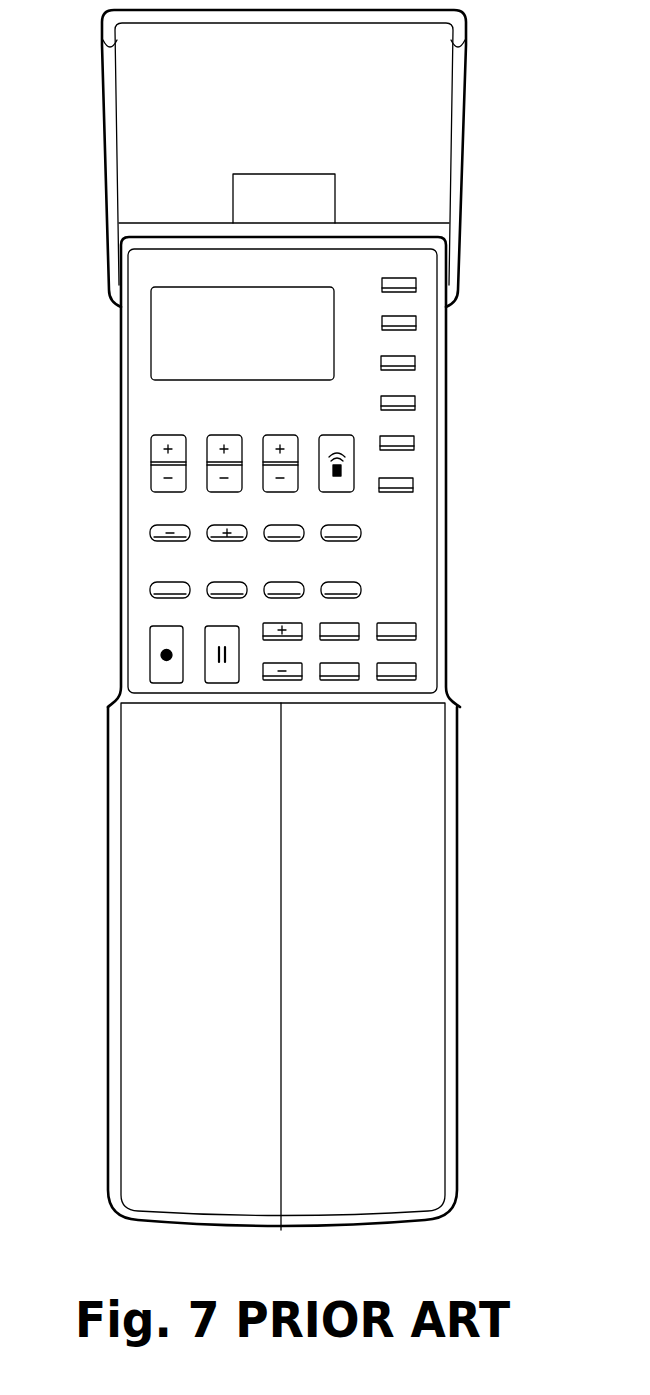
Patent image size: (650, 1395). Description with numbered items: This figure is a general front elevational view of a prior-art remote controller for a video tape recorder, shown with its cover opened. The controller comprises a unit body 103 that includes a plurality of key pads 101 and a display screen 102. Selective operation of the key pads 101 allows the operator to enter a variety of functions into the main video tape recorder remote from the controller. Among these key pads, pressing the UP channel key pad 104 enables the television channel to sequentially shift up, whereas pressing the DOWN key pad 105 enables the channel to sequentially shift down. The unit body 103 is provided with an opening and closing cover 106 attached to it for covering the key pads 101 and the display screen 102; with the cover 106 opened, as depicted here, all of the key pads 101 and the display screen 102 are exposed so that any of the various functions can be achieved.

The key pads 101 is at (172, 438).
The display screen 102 is at (204, 300).
The unit body 103 is at (120, 650).
The UP channel key pad 104 is at (300, 634).
The DOWN key pad 105 is at (285, 681).
The opening and closing cover 106 is at (463, 163).